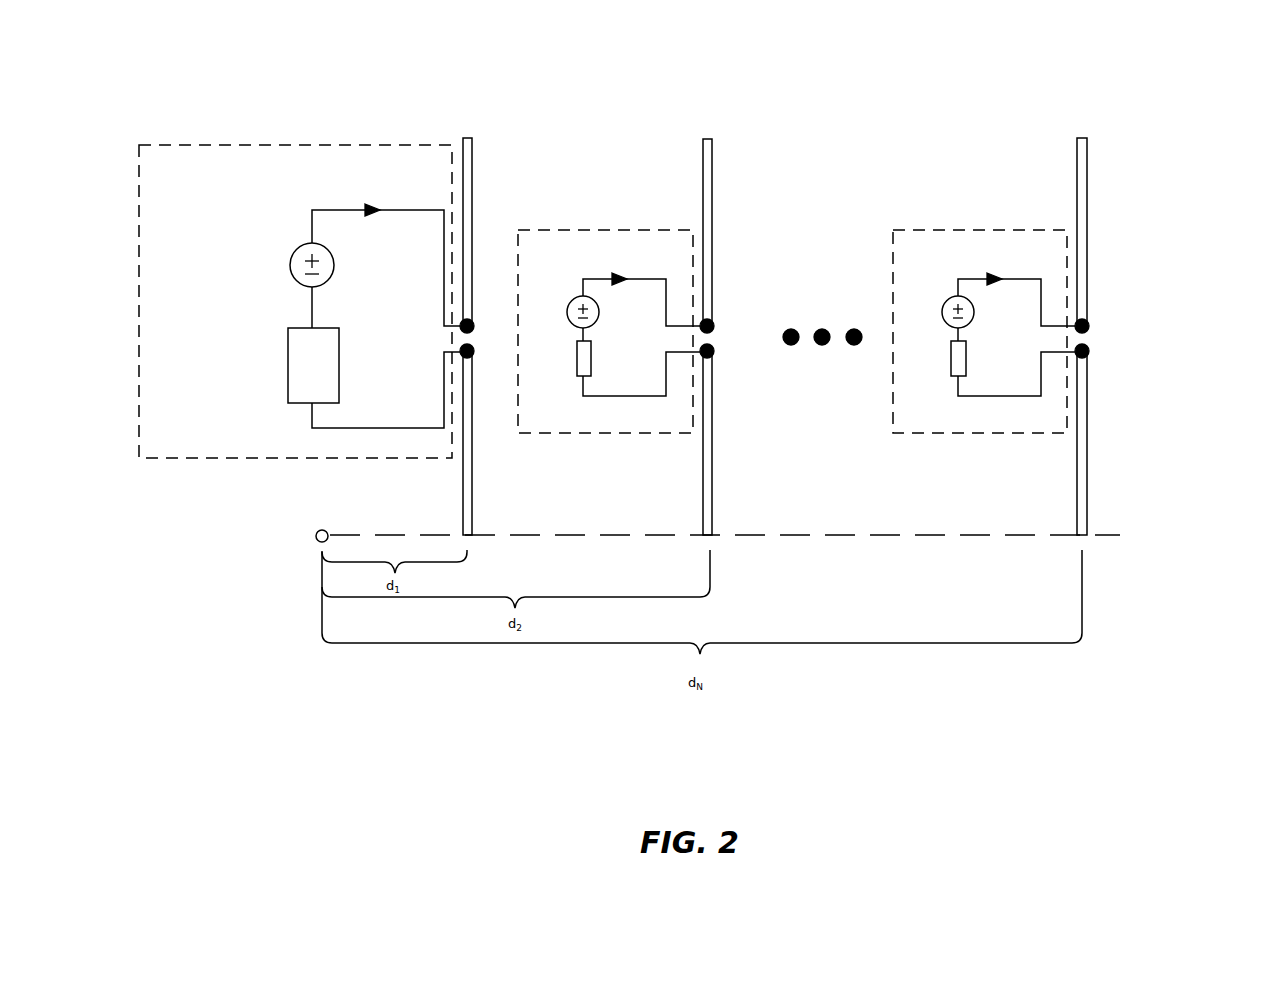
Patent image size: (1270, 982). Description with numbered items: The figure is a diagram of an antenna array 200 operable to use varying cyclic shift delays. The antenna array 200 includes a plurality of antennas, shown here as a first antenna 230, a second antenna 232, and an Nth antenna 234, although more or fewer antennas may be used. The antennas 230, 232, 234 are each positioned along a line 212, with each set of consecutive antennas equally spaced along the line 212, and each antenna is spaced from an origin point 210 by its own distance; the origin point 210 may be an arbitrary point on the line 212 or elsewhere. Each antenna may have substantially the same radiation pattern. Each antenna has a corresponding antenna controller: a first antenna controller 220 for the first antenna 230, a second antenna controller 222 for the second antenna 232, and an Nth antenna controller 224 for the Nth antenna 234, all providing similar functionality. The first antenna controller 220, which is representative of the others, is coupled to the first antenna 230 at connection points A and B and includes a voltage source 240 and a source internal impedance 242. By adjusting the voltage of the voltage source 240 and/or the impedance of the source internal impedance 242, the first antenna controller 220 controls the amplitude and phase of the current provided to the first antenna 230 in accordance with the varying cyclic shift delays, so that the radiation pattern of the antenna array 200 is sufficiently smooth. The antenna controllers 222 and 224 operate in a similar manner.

The antenna array 200 is at (1228, 68).
The origin point 210 is at (325, 530).
The line 212 is at (1100, 535).
The first antenna controller 220 is at (299, 286).
The second antenna controller 222 is at (528, 230).
The Nth antenna controller 224 is at (900, 230).
The first antenna 230 is at (473, 172).
The second antenna 232 is at (713, 165).
The Nth antenna 234 is at (1087, 165).
The voltage source 240 is at (298, 245).
The source internal impedance 242 is at (288, 357).